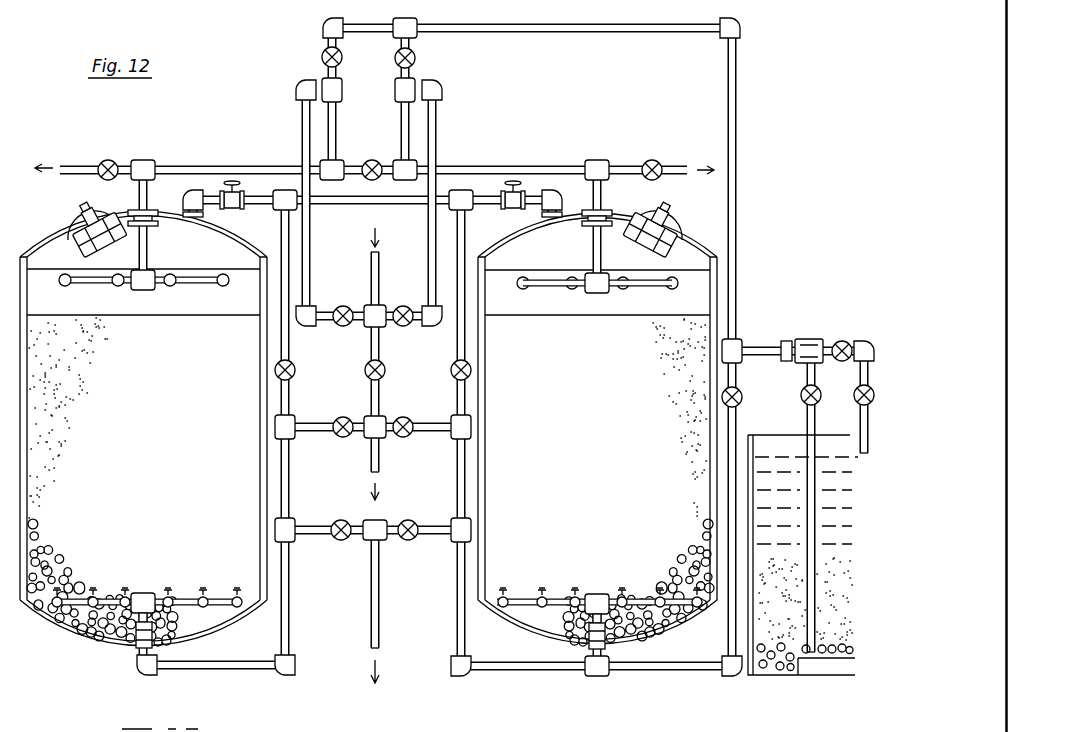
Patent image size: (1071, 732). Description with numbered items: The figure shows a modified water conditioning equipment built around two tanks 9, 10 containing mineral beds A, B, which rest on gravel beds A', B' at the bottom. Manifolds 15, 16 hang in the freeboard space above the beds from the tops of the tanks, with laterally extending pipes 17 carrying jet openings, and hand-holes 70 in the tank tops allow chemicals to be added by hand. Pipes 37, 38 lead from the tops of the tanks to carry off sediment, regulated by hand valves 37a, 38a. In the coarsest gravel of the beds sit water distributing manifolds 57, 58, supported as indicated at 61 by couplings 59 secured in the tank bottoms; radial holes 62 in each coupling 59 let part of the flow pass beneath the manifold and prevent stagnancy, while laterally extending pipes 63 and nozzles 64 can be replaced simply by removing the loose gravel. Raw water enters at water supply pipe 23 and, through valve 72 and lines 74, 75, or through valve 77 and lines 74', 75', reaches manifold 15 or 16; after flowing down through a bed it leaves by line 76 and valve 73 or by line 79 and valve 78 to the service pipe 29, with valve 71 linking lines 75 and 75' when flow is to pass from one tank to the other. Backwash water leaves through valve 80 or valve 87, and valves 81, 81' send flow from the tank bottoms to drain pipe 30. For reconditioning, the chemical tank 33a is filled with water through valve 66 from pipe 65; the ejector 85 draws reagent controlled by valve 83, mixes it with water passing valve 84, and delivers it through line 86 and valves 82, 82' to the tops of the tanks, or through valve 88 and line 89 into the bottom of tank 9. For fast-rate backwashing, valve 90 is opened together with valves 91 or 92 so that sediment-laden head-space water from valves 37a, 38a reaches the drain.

The tank 9 is at (621, 429).
The tank 10 is at (183, 428).
The manifold 15 is at (640, 288).
The manifold 16 is at (198, 287).
The laterally extending pipes 17 is at (68, 285).
The water supply pipe 23 is at (379, 265).
The service pipe 29 is at (383, 470).
The drain pipe 30 is at (381, 632).
The chemical tank 33a is at (766, 680).
The pipe 37 is at (556, 213).
The hand valve 37a is at (505, 214).
The pipe 38 is at (188, 208).
The hand valve 38a is at (235, 212).
The water distributing manifold 57 is at (527, 618).
The water distributing manifold 58 is at (188, 612).
The tubular member or coupling 59 is at (137, 662).
The manifold support 61 is at (152, 620).
The radial holes 62 is at (165, 645).
The laterally extending pipes 63 is at (184, 598).
The nozzles 64 is at (135, 596).
The pipe 65 is at (872, 342).
The valve 66 is at (855, 405).
The hand-hole or manhole 70 is at (68, 224).
The valve 71 is at (372, 160).
The valve 72 is at (404, 327).
The valve 73 is at (413, 432).
The line 74 is at (455, 203).
The line 74' is at (283, 203).
The line 75 is at (527, 156).
The line 75' is at (187, 153).
The line 76 is at (513, 674).
The valve 77 is at (345, 327).
The valve 78 is at (343, 440).
The line 79 is at (224, 676).
The valve 80 is at (653, 162).
The valve 81 is at (411, 556).
The valve 81' is at (337, 553).
The valve 82 is at (430, 63).
The valve 82' is at (350, 68).
The valve 83 is at (803, 400).
The valve 84 is at (842, 341).
The ejector 85 is at (792, 341).
The line 86 is at (737, 194).
The valve 87 is at (112, 162).
The valve 88 is at (742, 395).
The line 89 is at (728, 636).
The valve 90 is at (367, 380).
The valve 91 is at (296, 374).
The valve 92 is at (452, 375).
The mineral bed A is at (608, 399).
The mineral bed B is at (149, 392).
The gravel bed A' is at (624, 552).
The gravel bed B' is at (90, 547).